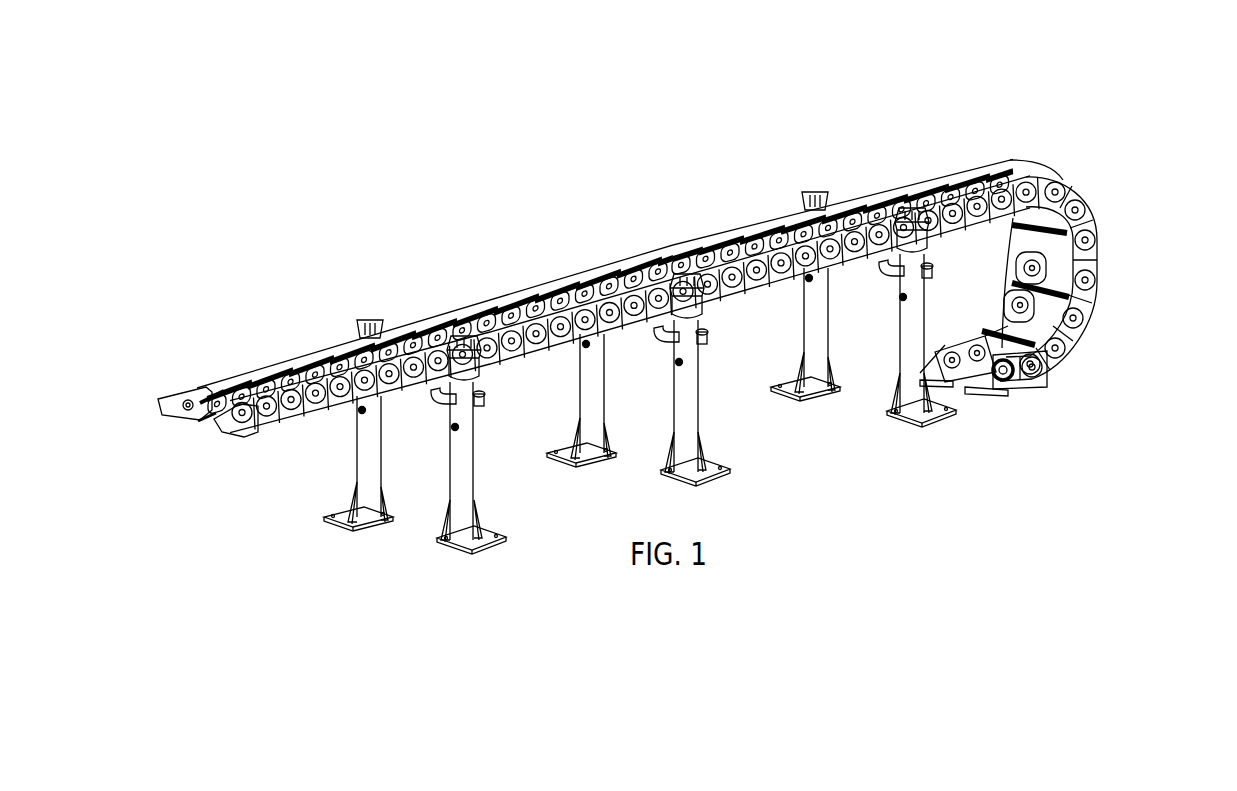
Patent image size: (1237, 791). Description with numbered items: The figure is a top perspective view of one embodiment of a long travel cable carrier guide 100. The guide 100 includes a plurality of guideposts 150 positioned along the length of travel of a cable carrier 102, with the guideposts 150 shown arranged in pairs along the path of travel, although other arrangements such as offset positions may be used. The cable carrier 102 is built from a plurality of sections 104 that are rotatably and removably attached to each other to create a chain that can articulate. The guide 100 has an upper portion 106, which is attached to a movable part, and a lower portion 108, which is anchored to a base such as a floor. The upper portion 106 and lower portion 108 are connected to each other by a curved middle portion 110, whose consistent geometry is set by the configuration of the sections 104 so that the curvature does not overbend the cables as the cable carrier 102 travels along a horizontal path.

The long travel cable carrier guide 100 is at (319, 118).
The cable carrier 102 is at (243, 365).
The sections 104 is at (447, 318).
The upper portion 106 is at (963, 137).
The lower portion 108 is at (1072, 373).
The curved middle portion 110 is at (1110, 150).
The guideposts 150 is at (358, 437).